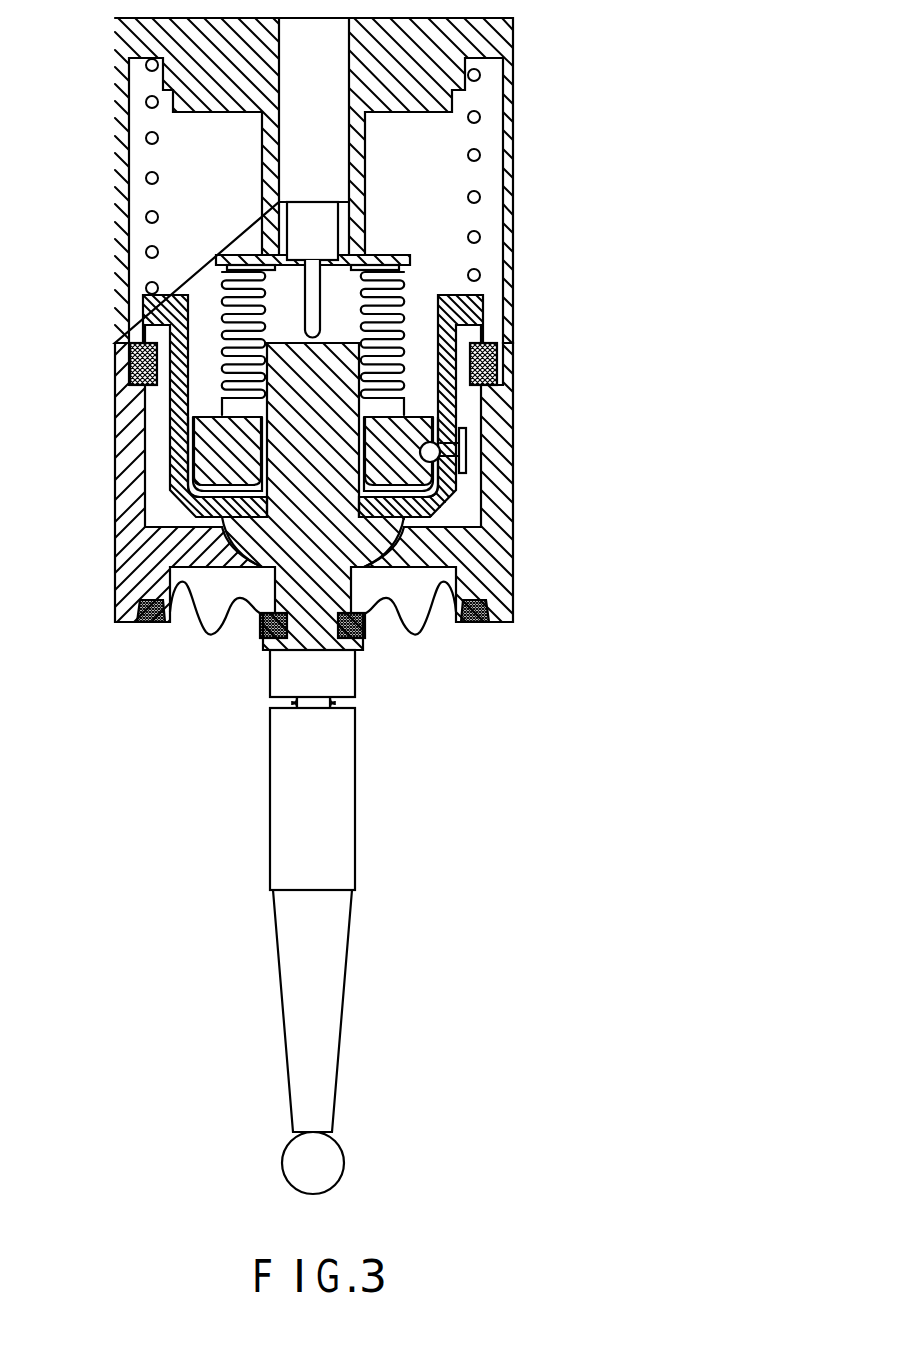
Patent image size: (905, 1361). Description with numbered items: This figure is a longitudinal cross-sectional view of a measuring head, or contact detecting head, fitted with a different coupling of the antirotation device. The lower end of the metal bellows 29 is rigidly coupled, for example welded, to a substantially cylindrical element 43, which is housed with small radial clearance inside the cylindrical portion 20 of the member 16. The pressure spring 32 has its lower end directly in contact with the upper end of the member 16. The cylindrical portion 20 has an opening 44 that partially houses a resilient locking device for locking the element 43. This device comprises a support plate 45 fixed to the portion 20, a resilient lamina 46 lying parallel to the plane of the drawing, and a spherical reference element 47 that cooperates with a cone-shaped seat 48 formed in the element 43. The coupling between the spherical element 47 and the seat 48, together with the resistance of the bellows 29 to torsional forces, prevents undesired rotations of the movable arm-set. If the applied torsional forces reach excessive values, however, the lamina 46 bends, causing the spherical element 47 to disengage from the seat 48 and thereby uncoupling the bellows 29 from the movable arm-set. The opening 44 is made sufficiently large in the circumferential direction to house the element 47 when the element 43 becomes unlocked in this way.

The member 16 is at (172, 505).
The cylindrical portion 20 is at (462, 404).
The metal bellows 29 is at (404, 290).
The pressure spring 32 is at (480, 155).
The substantially cylindrical element 43 is at (200, 418).
The opening 44 is at (440, 488).
The support plate 45 is at (466, 441).
The resilient lamina 46 is at (440, 453).
The spherical reference element 47 is at (442, 461).
The cone-shaped seat 48 is at (440, 498).